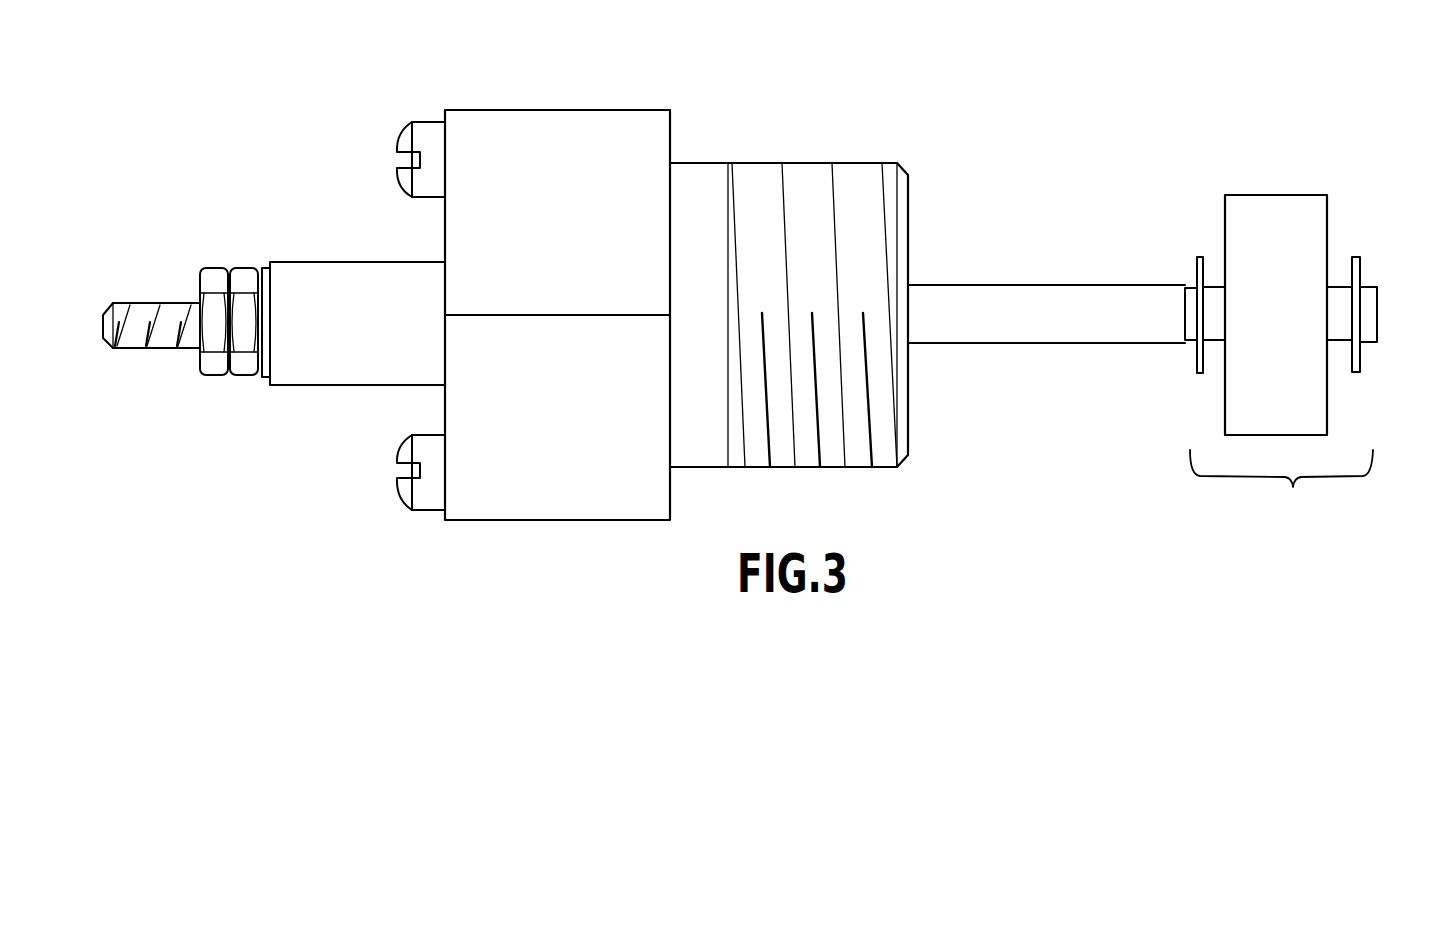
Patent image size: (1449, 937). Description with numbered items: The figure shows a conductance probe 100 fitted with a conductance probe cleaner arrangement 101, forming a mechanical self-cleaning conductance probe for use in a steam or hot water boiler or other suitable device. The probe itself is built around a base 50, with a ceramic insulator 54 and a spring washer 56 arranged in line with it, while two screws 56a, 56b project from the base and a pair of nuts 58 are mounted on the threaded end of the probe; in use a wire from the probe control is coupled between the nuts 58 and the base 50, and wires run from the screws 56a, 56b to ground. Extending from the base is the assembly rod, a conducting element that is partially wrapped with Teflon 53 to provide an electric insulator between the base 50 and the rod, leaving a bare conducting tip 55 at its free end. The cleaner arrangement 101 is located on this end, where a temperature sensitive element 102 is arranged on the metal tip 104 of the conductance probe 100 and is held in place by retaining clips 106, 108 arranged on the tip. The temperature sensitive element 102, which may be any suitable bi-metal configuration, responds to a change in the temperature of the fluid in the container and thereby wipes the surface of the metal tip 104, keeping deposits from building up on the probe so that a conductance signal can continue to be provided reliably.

The conductance probe 100 is at (228, 128).
The base 50 is at (550, 110).
The Teflon 53 is at (1005, 285).
The ceramic insulator 54 is at (348, 282).
The conducting tip 55 is at (1342, 330).
The spring washer 56 is at (263, 266).
The screw 56a is at (423, 122).
The screw 56b is at (415, 510).
The nuts 58 is at (215, 376).
The conductance probe cleaner arrangement 101 is at (1306, 515).
The temperature sensitive element 102 is at (1312, 195).
The metal tip 104 is at (1190, 285).
The retaining clip 106 is at (1357, 257).
The retaining clip 108 is at (1197, 256).